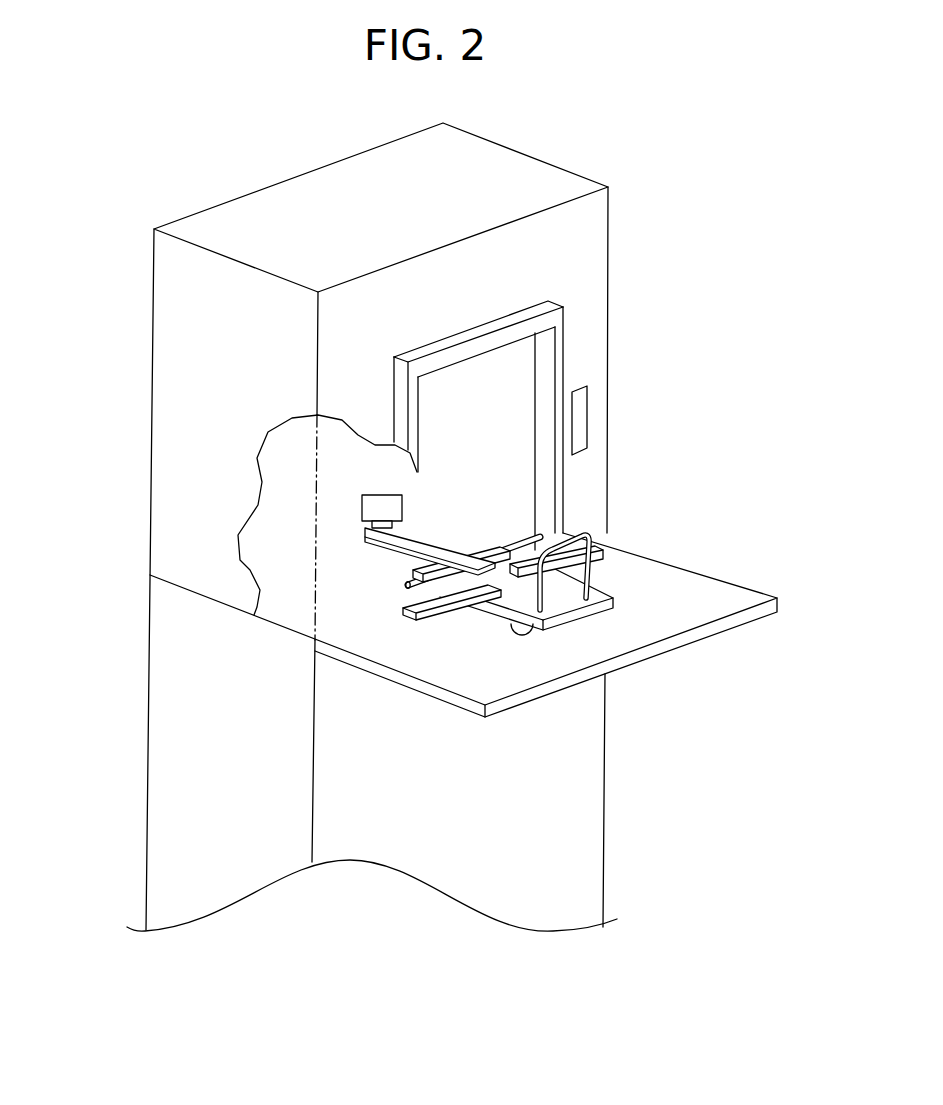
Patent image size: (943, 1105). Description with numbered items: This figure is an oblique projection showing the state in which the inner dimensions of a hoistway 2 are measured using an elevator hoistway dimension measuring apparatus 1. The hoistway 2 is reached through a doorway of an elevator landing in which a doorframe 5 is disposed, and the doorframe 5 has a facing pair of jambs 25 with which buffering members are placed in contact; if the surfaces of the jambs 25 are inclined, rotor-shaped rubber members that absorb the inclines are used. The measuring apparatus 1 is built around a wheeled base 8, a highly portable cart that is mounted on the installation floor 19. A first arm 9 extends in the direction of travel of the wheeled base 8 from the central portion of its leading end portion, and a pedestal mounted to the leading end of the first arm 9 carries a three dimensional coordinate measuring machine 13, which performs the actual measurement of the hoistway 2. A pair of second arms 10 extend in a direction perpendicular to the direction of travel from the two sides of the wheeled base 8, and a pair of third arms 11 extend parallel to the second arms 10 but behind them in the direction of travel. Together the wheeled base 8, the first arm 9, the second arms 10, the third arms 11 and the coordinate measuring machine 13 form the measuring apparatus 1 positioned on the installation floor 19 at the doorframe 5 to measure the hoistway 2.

The elevator hoistway dimension measuring apparatus 1 is at (410, 557).
The hoistway 2 is at (478, 405).
The doorframe 5 is at (573, 330).
The wheeled base 8 is at (562, 602).
The first arm 9 is at (372, 530).
The second arms 10 is at (405, 597).
The third arms 11 is at (438, 612).
The three dimensional coordinate measuring machine 13 is at (372, 495).
The installation floor 19 is at (715, 595).
The jambs 25 is at (547, 480).